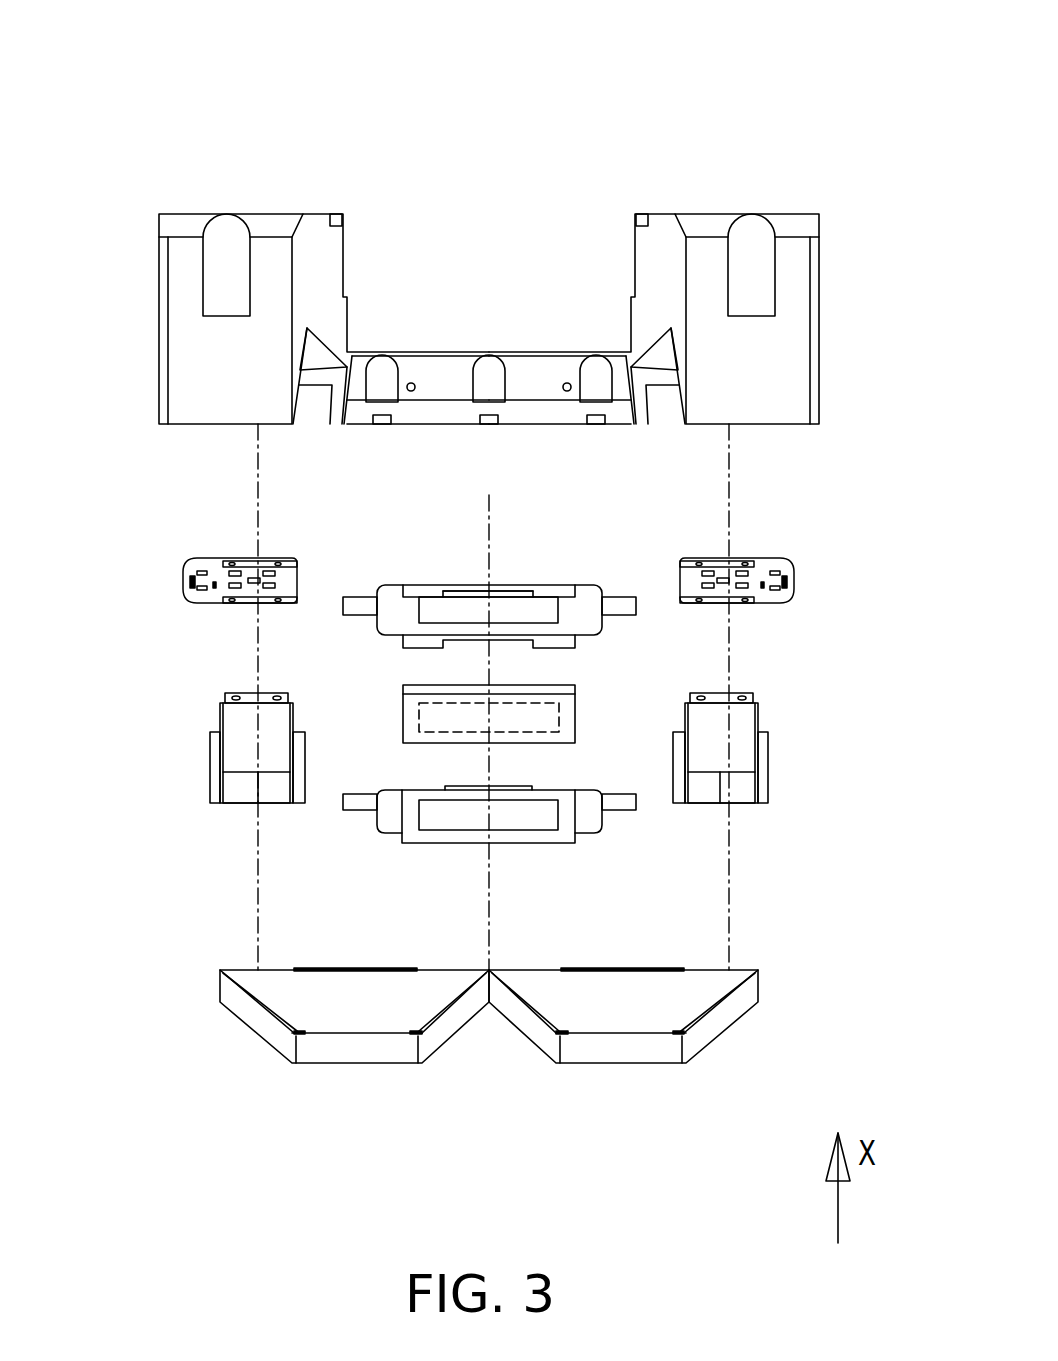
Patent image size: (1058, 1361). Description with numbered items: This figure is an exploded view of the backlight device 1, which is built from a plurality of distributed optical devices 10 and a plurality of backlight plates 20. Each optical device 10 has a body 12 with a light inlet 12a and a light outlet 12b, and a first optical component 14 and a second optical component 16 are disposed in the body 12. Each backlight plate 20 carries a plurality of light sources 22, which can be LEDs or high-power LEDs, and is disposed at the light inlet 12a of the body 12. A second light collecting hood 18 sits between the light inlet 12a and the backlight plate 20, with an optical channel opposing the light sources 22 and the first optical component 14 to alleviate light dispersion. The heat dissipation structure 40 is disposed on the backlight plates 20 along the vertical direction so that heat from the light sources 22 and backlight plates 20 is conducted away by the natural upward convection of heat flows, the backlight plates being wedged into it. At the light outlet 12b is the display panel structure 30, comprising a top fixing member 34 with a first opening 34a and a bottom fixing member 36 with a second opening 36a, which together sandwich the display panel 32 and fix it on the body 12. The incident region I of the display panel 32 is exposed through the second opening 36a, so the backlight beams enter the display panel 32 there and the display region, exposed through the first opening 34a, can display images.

The backlight device 1 is at (925, 103).
The heat dissipation structure 40 is at (333, 183).
The display panel structure 30 is at (443, 557).
The top fixing member 34 is at (468, 572).
The first opening 34a is at (437, 612).
The display panel 32 is at (447, 685).
The incident region I is at (422, 722).
The bottom fixing member 36 is at (479, 785).
The second opening 36a is at (443, 822).
The backlight plate 20 is at (230, 568).
The light source 22 is at (268, 578).
The second light collecting hood 18 is at (240, 748).
The optical device 10 is at (477, 992).
The body 12 is at (293, 997).
The light inlet 12a is at (240, 960).
The light outlet 12b is at (443, 958).
The first optical component 14 is at (253, 1022).
The second optical component 16 is at (523, 1023).